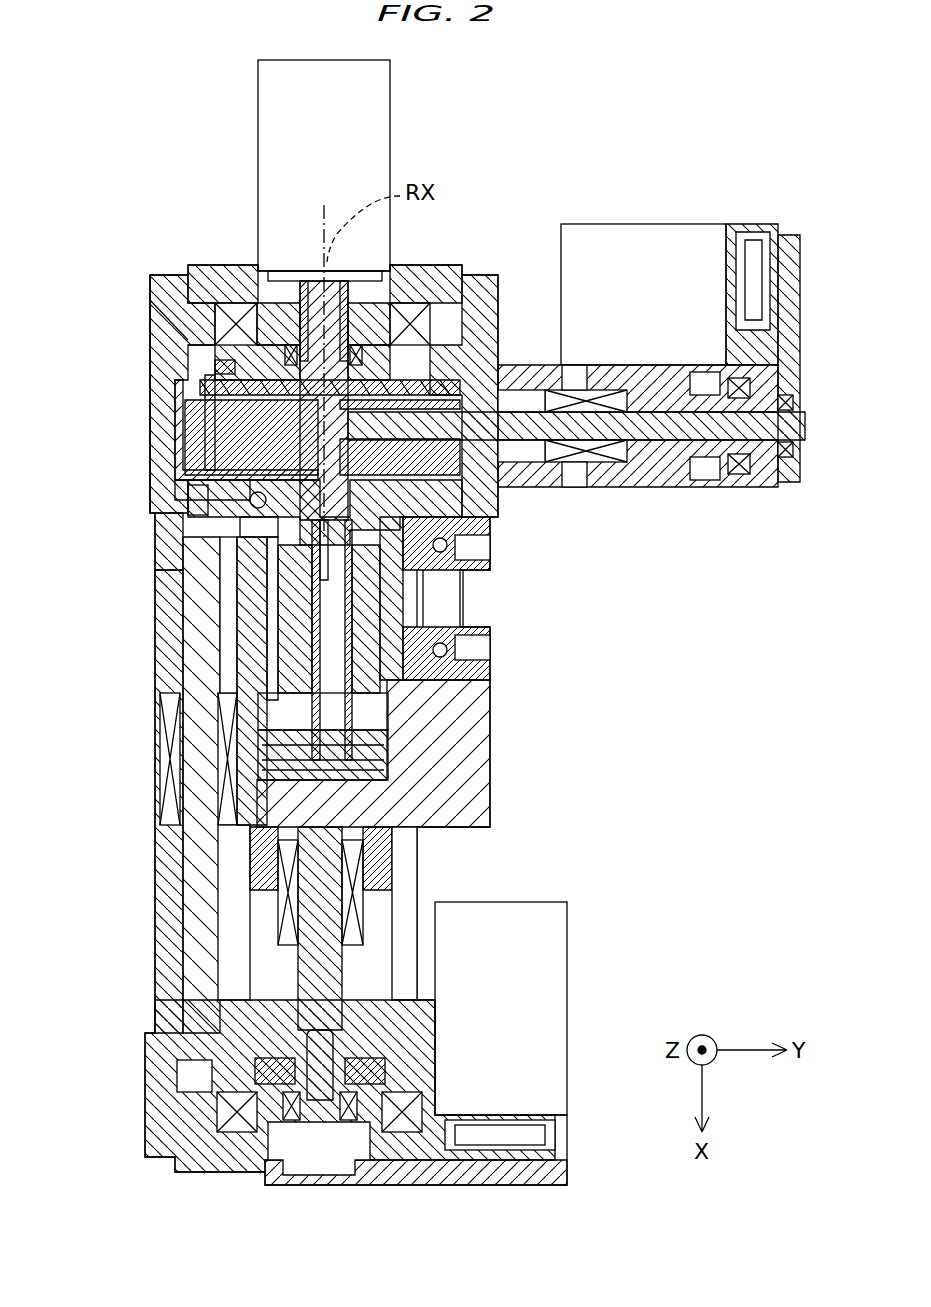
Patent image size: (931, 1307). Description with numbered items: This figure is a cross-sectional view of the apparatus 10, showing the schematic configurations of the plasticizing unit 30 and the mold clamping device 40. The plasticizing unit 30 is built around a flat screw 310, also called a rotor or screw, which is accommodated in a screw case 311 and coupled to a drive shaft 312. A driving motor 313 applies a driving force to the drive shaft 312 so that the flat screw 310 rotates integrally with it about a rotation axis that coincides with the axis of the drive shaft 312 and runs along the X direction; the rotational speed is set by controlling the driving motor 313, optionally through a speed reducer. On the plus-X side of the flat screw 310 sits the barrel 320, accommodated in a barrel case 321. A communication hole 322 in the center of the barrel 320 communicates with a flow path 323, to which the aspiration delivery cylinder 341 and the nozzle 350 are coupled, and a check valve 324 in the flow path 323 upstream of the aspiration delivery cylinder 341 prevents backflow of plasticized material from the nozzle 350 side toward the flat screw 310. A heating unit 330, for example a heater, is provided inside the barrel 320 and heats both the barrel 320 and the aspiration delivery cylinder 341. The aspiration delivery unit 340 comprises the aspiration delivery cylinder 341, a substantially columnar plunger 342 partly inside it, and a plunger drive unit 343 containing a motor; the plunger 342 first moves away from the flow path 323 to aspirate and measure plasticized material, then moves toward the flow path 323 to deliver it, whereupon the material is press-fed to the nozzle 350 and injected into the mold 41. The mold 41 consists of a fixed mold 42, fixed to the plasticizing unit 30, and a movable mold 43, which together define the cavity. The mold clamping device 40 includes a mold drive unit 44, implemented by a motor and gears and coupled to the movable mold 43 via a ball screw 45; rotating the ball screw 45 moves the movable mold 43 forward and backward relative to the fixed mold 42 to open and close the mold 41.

The machine tool / stage device 10 is at (133, 133).
The plasticizing unit 30 is at (470, 206).
The mold clamping device 40 is at (520, 890).
The mold 41 is at (565, 565).
The fixed mold 42 is at (400, 572).
The movable mold 43 is at (400, 610).
The mold drive unit 44 is at (567, 1010).
The ball screw 45 is at (300, 960).
The flat screw 310 is at (300, 372).
The screw case 311 is at (235, 372).
The drive shaft 312 is at (270, 295).
The driving motor 313 is at (258, 165).
The barrel 320 is at (195, 388).
The barrel case 321 is at (155, 510).
The communication hole 322 is at (190, 285).
The flow path 323 is at (180, 486).
The check valve 324 is at (175, 455).
The heating unit 330 is at (175, 420).
The aspiration delivery unit 340 is at (742, 512).
The aspiration delivery cylinder 341 is at (470, 510).
The plunger 342 is at (648, 432).
The plunger drive unit 343 is at (622, 240).
The nozzle 350 is at (300, 535).